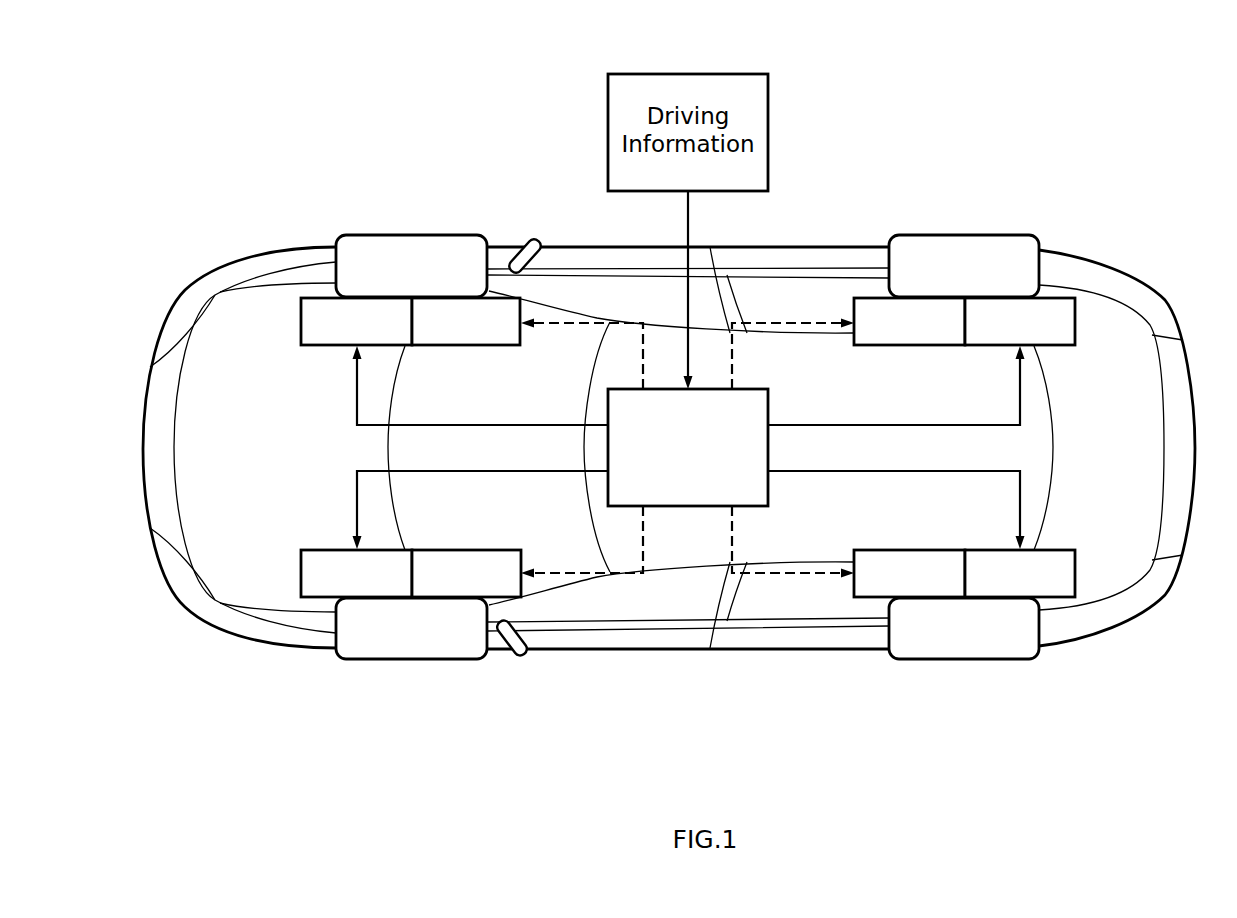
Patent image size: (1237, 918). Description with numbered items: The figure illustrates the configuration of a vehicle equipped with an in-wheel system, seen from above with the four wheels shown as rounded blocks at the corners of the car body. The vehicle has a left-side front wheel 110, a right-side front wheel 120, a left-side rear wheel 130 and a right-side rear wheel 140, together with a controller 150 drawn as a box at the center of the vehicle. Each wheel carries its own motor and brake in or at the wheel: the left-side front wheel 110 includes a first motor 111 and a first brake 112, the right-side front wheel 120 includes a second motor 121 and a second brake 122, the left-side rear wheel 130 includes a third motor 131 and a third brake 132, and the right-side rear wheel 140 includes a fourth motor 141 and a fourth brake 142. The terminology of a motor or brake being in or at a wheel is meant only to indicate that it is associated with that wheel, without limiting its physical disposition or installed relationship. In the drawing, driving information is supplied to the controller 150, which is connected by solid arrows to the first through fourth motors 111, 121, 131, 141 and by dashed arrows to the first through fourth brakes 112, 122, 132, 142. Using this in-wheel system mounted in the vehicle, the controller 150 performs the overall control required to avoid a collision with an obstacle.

The left-side front wheel 110 is at (411, 660).
The first motor 111 is at (298, 548).
The first brake 112 is at (520, 548).
The right-side front wheel 120 is at (411, 233).
The second motor 121 is at (301, 347).
The second brake 122 is at (521, 347).
The left-side rear wheel 130 is at (964, 660).
The third motor 131 is at (1072, 548).
The third brake 132 is at (851, 548).
The right-side rear wheel 140 is at (964, 233).
The fourth motor 141 is at (1072, 347).
The fourth brake 142 is at (855, 347).
The controller 150 is at (768, 443).